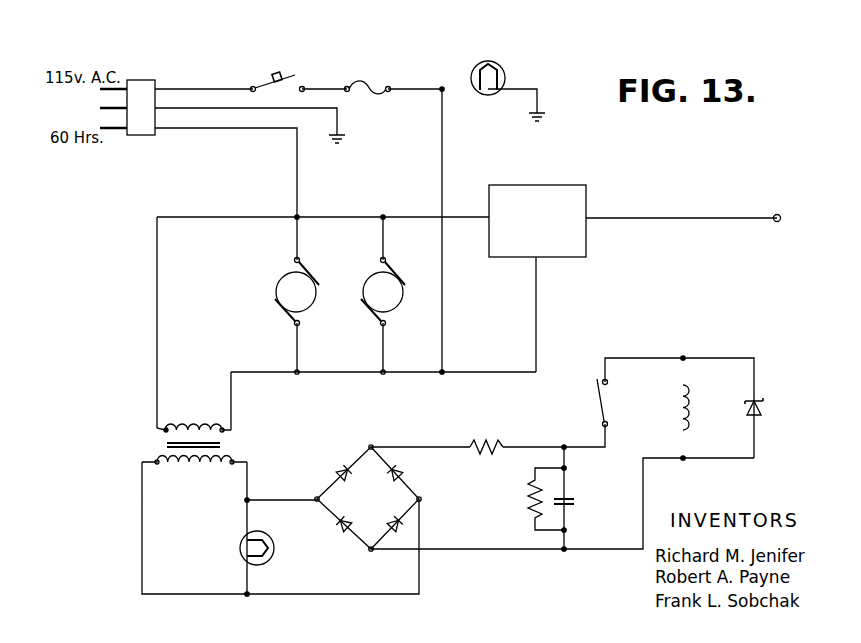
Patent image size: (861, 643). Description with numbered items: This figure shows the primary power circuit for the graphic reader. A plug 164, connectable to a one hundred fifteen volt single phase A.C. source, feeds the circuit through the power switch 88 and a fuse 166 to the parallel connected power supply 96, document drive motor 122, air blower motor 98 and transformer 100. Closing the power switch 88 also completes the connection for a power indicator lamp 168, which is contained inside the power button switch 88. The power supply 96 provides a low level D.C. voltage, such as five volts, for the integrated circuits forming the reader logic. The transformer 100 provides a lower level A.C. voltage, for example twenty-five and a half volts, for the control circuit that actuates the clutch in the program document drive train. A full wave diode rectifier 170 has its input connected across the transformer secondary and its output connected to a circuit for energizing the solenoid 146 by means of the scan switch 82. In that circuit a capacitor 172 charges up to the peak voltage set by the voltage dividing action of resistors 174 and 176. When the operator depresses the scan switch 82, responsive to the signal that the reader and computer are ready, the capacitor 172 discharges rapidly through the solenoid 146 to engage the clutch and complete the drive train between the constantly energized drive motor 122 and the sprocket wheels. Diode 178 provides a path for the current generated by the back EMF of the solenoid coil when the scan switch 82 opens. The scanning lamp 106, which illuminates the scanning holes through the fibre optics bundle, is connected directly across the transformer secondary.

The plug 164 is at (143, 80).
The power switch 88 is at (283, 73).
The fuse 166 is at (364, 80).
The power indicator lamp 168 is at (506, 72).
The power supply 96 is at (545, 185).
The air blower motor 98 is at (276, 306).
The document drive motor 122 is at (370, 306).
The transformer 100 is at (148, 438).
The scanning lamp 106 is at (267, 561).
The full wave diode rectifier 170 is at (382, 510).
The resistor 174 is at (492, 429).
The scan switch 82 is at (598, 411).
The resistor 176 is at (528, 506).
The capacitor 172 is at (573, 505).
The solenoid 146 is at (677, 401).
The diode 178 is at (769, 403).